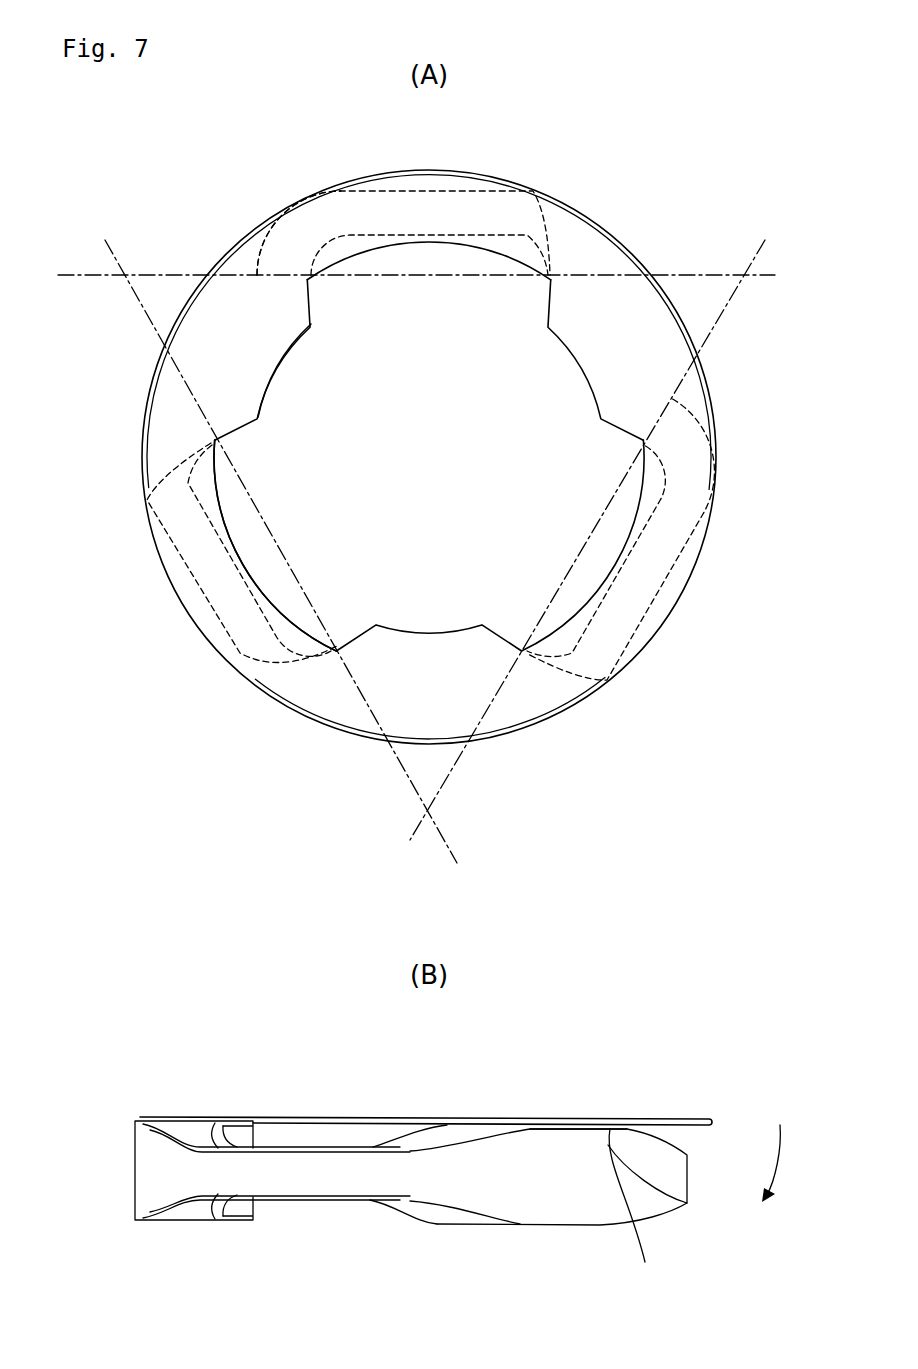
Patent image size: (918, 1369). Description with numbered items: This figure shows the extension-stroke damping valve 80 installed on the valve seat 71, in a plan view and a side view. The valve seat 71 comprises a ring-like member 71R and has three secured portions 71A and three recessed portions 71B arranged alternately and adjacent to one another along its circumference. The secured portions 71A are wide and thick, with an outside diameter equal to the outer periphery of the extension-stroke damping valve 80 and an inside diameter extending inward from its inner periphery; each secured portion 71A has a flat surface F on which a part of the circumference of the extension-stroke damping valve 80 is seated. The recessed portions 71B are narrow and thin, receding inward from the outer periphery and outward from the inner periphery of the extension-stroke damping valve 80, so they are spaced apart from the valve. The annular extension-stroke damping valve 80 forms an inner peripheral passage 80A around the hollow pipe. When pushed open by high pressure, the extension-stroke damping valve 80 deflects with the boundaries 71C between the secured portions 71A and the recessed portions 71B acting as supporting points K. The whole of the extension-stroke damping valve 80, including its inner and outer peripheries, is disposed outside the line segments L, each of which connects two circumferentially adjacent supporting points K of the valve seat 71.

The valve seat 71 is at (130, 427).
The secured portion 71A is at (268, 333).
The recessed portion 71B is at (472, 190).
The boundary 71C is at (257, 275).
The ring-like member 71R is at (330, 732).
The extension-stroke damping valve 80 is at (254, 364).
The inner peripheral passage 80A is at (232, 380).
The flat surface F is at (278, 317).
The supporting point K is at (310, 273).
The line segment L is at (716, 273).